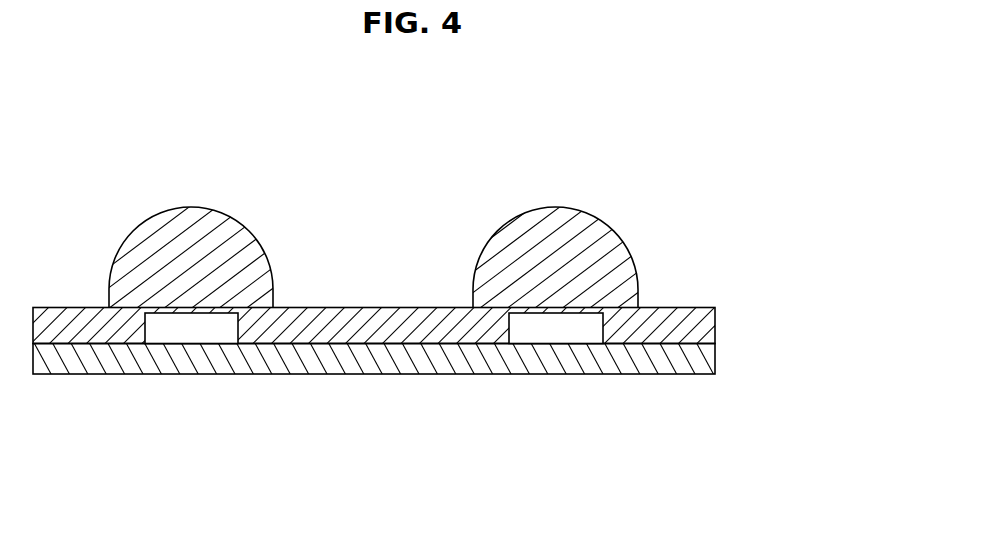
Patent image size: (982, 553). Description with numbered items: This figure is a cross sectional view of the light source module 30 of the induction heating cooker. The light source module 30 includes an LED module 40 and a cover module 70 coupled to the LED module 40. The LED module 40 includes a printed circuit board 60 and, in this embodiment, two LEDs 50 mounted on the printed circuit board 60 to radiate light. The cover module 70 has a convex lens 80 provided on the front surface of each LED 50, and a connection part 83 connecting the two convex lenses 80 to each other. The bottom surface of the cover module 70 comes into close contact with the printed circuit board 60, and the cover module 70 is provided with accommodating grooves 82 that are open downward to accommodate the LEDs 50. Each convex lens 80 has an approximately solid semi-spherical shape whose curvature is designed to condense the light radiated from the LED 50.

The light source module 30 is at (354, 122).
The LED module 40 is at (718, 362).
The LED 50 is at (187, 327).
The printed circuit board 60 is at (380, 362).
The cover module 70 is at (723, 304).
The convex lens 80 is at (155, 238).
The accommodating groove 82 is at (222, 313).
The connection part 83 is at (358, 327).